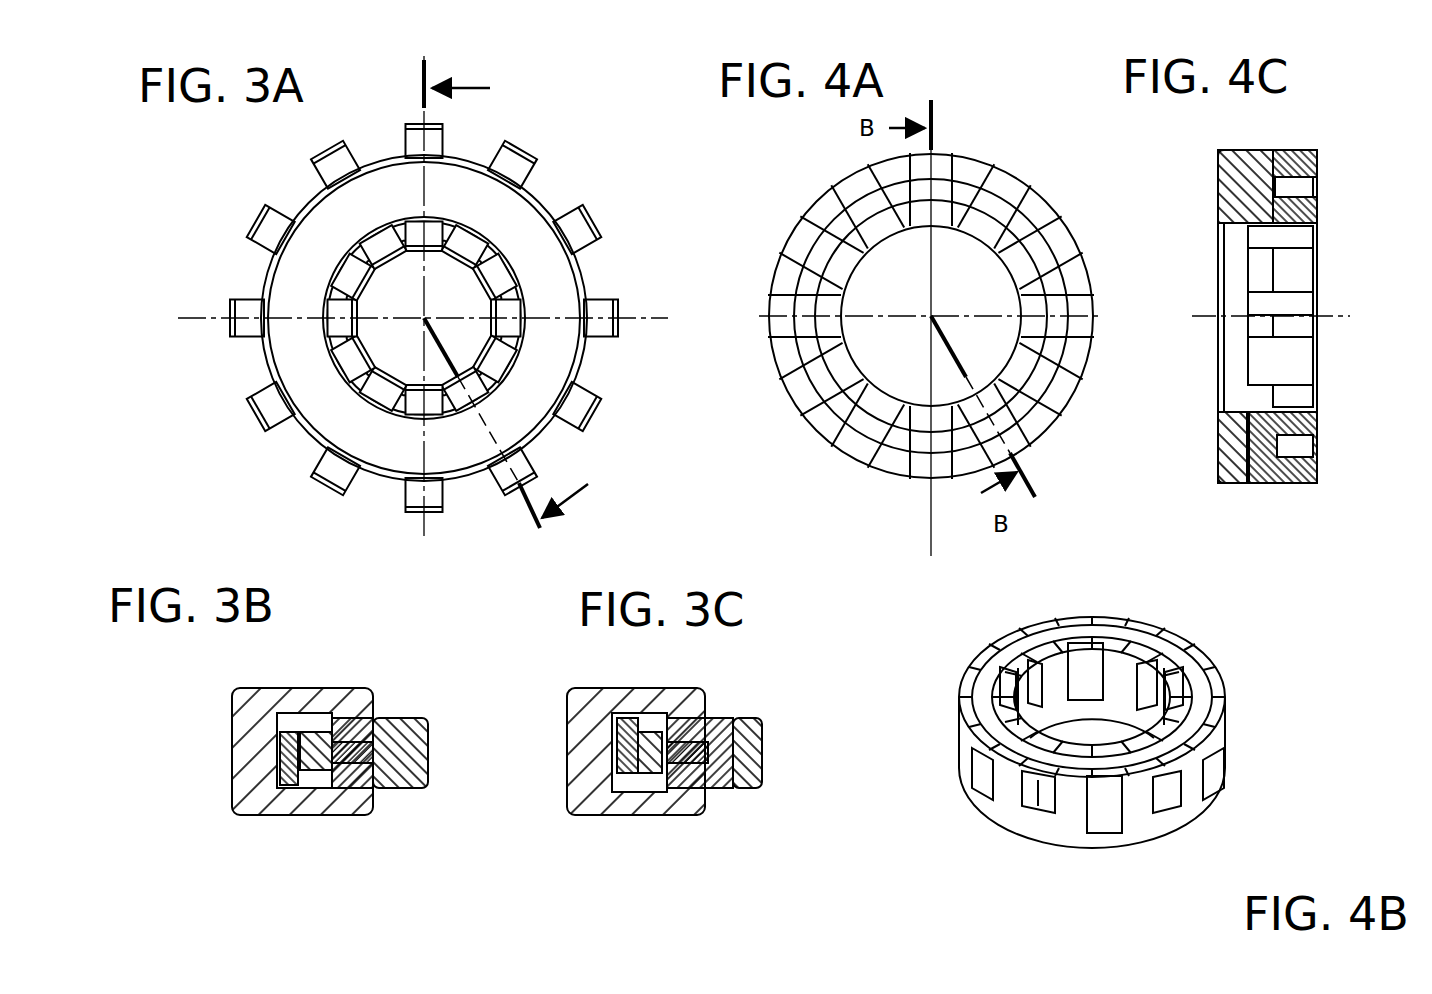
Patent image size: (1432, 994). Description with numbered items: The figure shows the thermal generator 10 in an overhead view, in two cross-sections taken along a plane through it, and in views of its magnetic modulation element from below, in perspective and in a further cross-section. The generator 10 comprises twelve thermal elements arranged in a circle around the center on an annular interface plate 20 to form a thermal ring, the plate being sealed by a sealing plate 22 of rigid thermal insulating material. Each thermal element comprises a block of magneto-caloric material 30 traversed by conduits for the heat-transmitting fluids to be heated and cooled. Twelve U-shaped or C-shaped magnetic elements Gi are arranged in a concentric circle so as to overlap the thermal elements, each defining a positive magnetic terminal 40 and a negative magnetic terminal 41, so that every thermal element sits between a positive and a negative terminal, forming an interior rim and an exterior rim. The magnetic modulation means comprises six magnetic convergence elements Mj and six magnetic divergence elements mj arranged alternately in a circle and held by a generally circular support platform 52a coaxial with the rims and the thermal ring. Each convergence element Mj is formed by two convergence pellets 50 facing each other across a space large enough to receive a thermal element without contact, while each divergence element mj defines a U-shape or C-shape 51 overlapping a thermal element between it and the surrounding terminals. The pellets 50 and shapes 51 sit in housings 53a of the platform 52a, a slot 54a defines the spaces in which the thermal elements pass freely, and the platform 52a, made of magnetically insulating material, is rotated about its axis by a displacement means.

In FIG. 3A, the generator 10 is at (757, 205).
In FIG. 3B, the annular interface plate 20 is at (298, 735).
In FIG. 3C, the annular interface plate 20 is at (645, 735).
In FIG. 3B, the sealing plate 22 is at (283, 770).
In FIG. 3C, the sealing plate 22 is at (620, 740).
In FIG. 3B, the block of magneto-caloric material 30 is at (342, 765).
In FIG. 3C, the block of magneto-caloric material 30 is at (700, 766).
In FIG. 3A, the positive magnetic terminal 40 is at (499, 312).
In FIG. 3A, the negative magnetic terminal 41 is at (508, 318).
In FIG. 4A, the convergence pellets 50 is at (963, 302).
In FIG. 4C, the convergence pellets 50 is at (1300, 170).
In FIG. 3B, the convergence pellets 50 is at (398, 718).
In FIG. 4B, the convergence pellets 50 is at (1058, 655).
In FIG. 4A, the U-shaped or C-shaped divergence element 51 is at (997, 272).
In FIG. 4C, the U-shaped or C-shaped divergence element 51 is at (1302, 225).
In FIG. 3C, the U-shaped or C-shaped divergence element 51 is at (742, 722).
In FIG. 4B, the U-shaped or C-shaped divergence element 51 is at (1087, 645).
In FIG. 3A, the support platform 52a is at (424, 318).
In FIG. 4A, the support platform 52a is at (992, 281).
In FIG. 4C, the support platform 52a is at (1222, 478).
In FIG. 3B, the support platform 52a is at (405, 784).
In FIG. 3C, the support platform 52a is at (760, 788).
In FIG. 4B, the support platform 52a is at (1010, 806).
In FIG. 4C, the housings 53a is at (1244, 252).
In FIG. 4B, the housings 53a is at (1097, 838).
In FIG. 4A, the slot 54a is at (931, 269).
In FIG. 4B, the slot 54a is at (1000, 672).
In FIG. 3A, the magnetic elements Gi is at (457, 317).
In FIG. 3B, the magnetic elements Gi is at (278, 795).
In FIG. 3C, the magnetic elements Gi is at (640, 796).
In FIG. 4C, the magnetic convergence elements Mj is at (1308, 148).
In FIG. 3B, the magnetic convergence elements Mj is at (384, 706).
In FIG. 4C, the magnetic divergence elements mj is at (1266, 488).
In FIG. 3C, the magnetic divergence elements mj is at (726, 718).